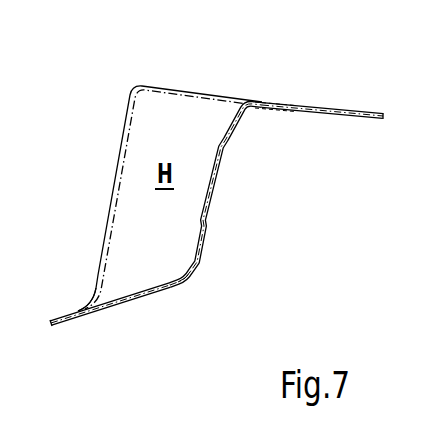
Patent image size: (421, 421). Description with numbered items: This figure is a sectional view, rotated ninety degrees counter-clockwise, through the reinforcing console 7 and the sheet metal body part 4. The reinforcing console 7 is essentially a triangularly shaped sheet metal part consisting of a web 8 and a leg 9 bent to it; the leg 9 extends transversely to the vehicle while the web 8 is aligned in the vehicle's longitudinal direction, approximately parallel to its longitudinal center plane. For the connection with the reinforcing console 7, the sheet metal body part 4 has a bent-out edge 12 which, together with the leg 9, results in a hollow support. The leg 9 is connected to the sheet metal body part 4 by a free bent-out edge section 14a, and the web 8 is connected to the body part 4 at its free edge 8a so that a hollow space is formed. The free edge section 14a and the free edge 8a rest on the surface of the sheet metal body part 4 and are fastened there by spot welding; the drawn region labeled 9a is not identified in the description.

The sheet metal body part 4 is at (173, 88).
The reinforcing console 7 is at (198, 288).
The web 8 is at (133, 342).
The free edge 8a is at (51, 352).
The leg 9 is at (246, 239).
The upper rail section 9a is at (293, 102).
The bent-out edge 12 is at (63, 313).
The free bent-out edge section 14a is at (267, 152).